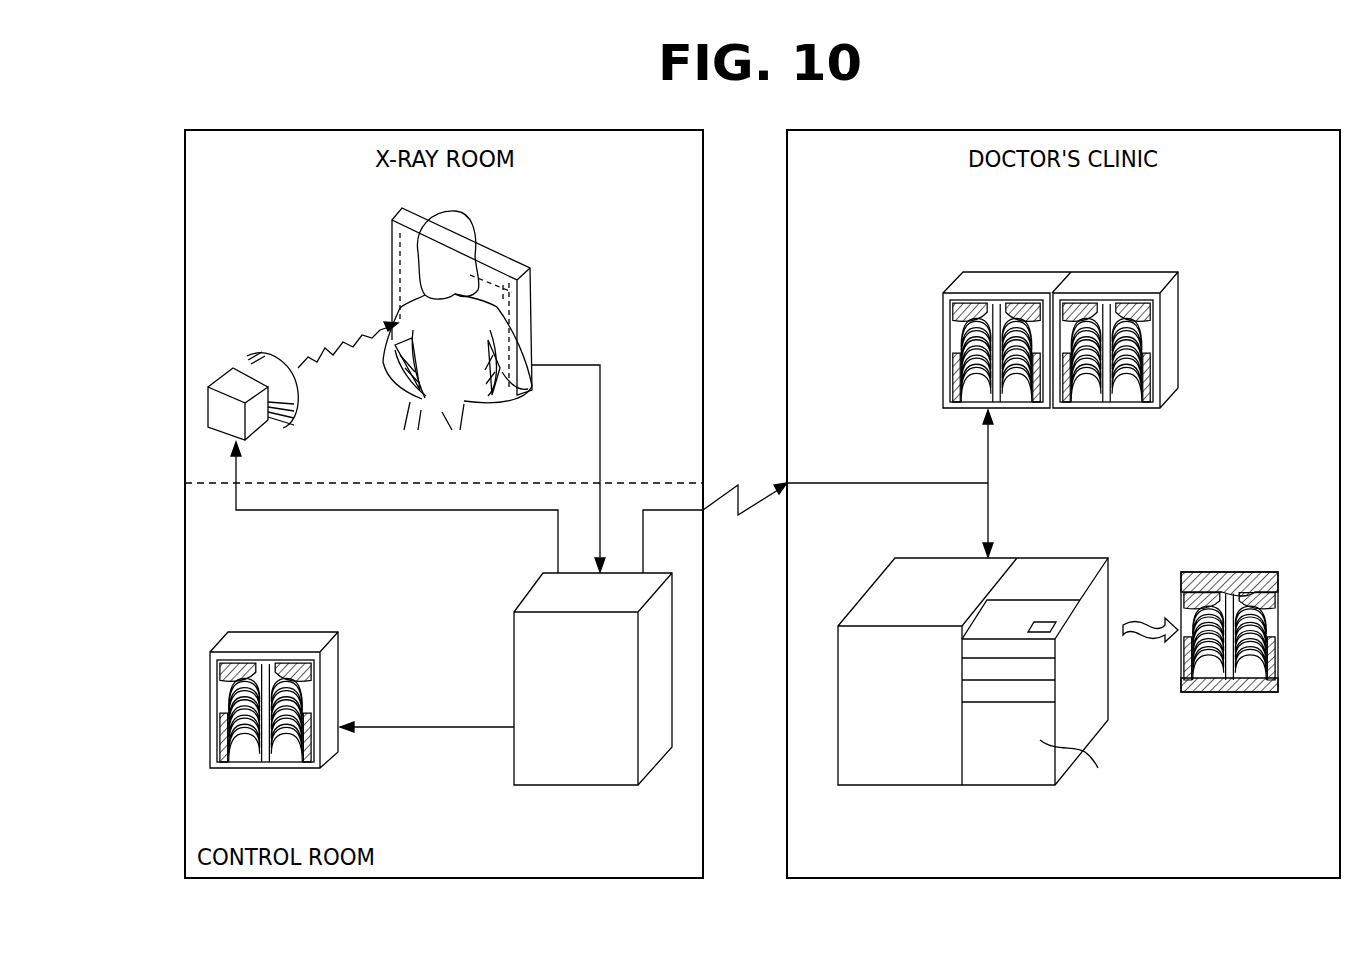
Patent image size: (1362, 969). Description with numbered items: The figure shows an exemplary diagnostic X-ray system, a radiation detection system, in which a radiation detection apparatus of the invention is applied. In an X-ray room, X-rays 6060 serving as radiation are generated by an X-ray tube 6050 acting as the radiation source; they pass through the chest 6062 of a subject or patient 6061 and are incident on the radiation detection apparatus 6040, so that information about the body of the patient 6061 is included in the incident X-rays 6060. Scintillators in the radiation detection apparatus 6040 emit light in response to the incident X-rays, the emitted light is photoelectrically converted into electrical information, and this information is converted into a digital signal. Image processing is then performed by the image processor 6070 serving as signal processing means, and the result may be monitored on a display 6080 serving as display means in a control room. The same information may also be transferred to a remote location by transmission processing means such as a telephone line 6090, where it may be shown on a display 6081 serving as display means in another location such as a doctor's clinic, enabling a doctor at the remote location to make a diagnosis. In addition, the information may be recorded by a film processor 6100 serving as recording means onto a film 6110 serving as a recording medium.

The radiation detection apparatus 6040 is at (500, 280).
The X-ray tube 6050 is at (213, 378).
The X-rays 6060 is at (338, 347).
The patient 6061 is at (458, 213).
The chest 6062 is at (445, 415).
The image processor 6070 is at (530, 766).
The display 6080 is at (273, 633).
The display 6081 is at (972, 272).
The telephone line 6090 is at (728, 491).
The film processor 6100 is at (940, 576).
The film 6110 is at (1196, 572).